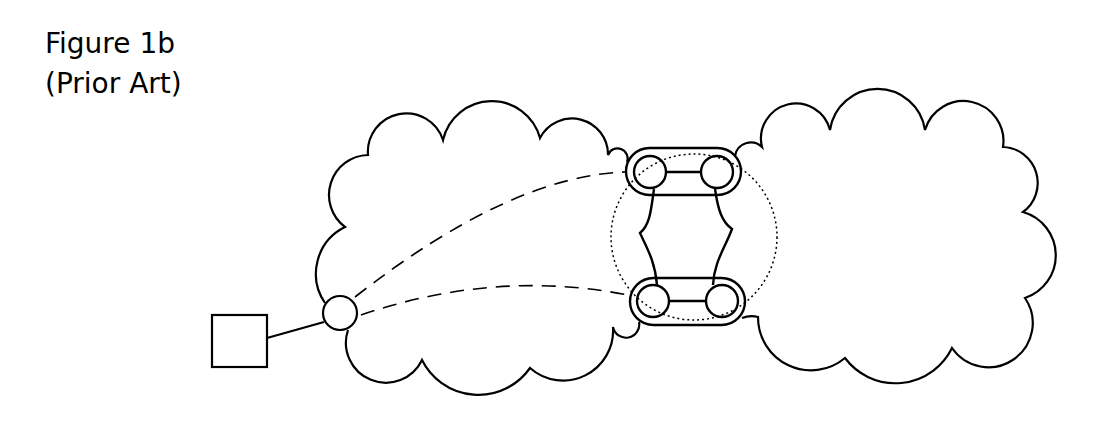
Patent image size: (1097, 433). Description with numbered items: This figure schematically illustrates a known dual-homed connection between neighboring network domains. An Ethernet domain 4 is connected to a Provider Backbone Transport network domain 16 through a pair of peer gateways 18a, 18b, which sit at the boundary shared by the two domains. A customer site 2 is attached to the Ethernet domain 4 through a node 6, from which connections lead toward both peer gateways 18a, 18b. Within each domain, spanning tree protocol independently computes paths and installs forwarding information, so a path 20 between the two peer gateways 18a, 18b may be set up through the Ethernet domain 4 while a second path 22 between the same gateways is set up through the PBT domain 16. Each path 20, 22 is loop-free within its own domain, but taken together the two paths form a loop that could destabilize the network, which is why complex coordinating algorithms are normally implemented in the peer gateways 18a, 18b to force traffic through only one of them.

The customer site (CS) 2 is at (226, 314).
The Ethernet domain 4 is at (510, 176).
The Ethernet node 6 is at (333, 331).
The Provider Backbone Transport (PBT) network domain 16 is at (907, 218).
The peer gateway 18a is at (688, 148).
The peer gateway 18b is at (687, 325).
The path 20 is at (610, 227).
The second path 22 is at (777, 238).